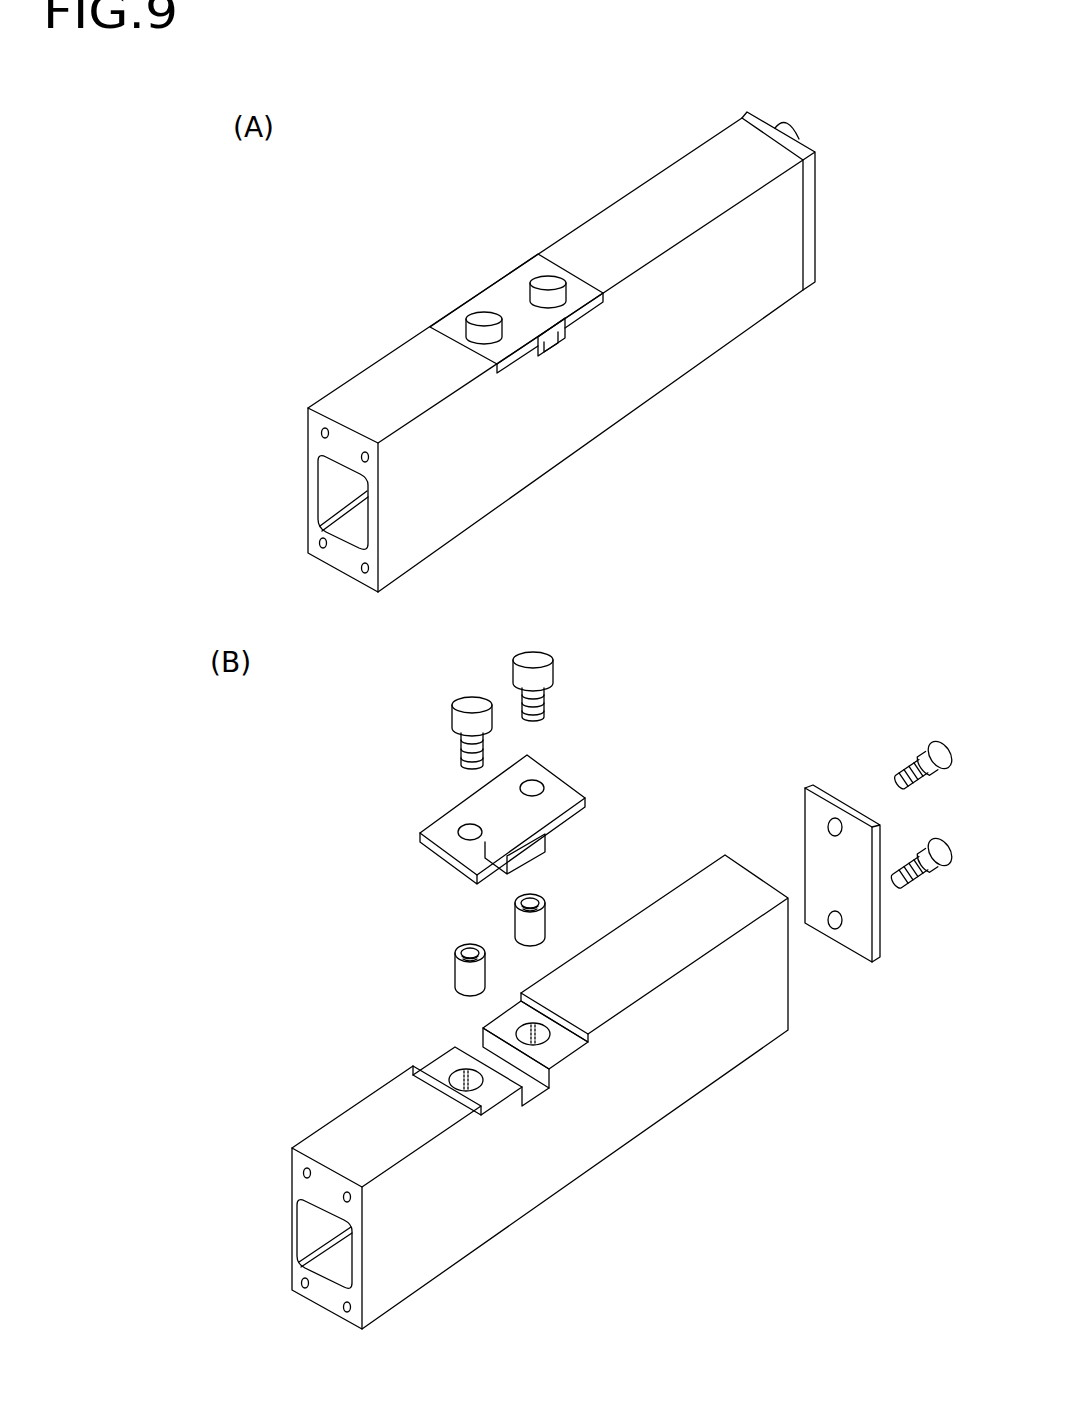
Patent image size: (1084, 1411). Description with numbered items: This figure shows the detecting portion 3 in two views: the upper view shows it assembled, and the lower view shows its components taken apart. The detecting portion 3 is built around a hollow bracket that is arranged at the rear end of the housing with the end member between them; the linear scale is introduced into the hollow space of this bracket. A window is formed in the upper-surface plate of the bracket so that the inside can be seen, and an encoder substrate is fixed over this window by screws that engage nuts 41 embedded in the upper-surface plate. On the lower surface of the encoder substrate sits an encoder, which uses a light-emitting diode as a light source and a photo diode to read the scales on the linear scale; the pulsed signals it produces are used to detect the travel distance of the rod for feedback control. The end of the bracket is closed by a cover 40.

The detecting portion 3 is at (501, 264).
The cover 40 is at (813, 787).
The nuts 41 is at (546, 908).